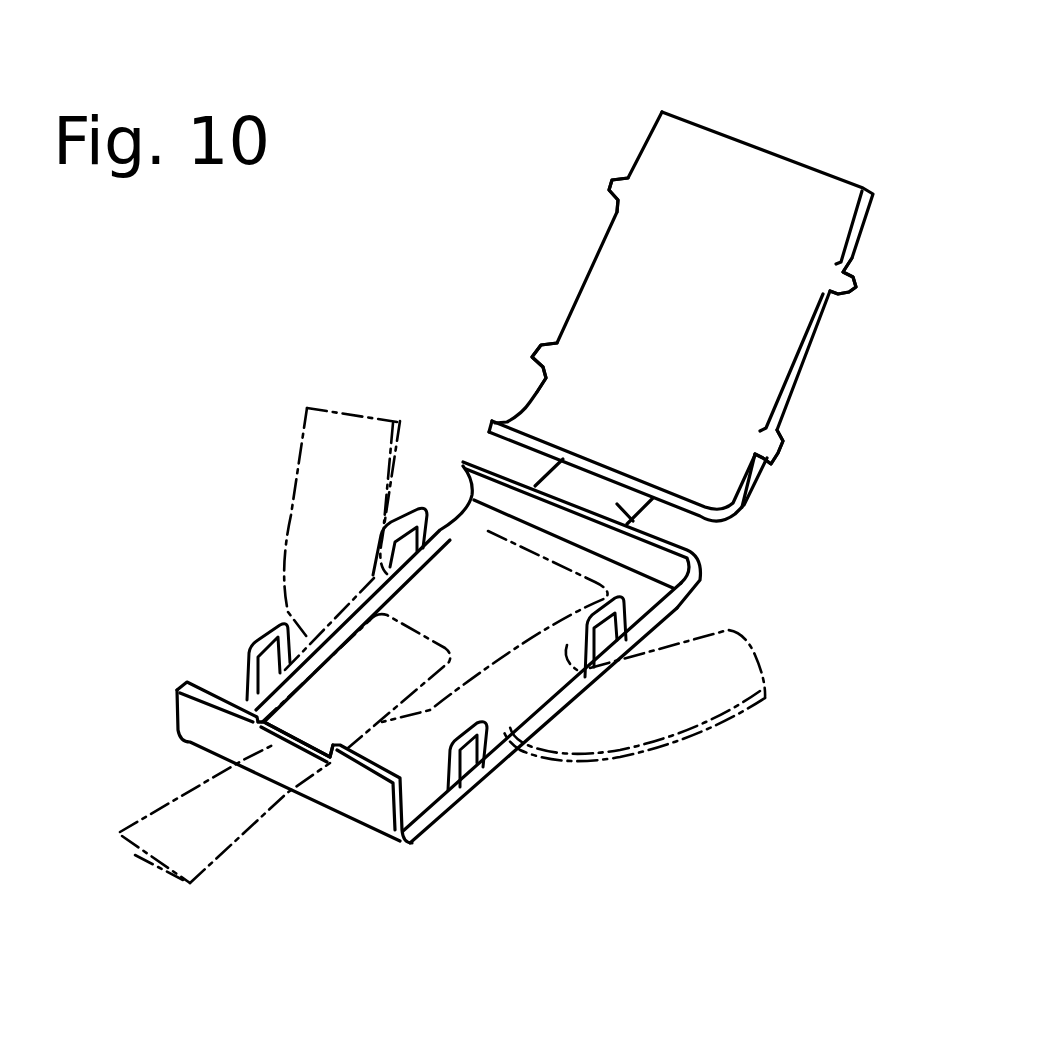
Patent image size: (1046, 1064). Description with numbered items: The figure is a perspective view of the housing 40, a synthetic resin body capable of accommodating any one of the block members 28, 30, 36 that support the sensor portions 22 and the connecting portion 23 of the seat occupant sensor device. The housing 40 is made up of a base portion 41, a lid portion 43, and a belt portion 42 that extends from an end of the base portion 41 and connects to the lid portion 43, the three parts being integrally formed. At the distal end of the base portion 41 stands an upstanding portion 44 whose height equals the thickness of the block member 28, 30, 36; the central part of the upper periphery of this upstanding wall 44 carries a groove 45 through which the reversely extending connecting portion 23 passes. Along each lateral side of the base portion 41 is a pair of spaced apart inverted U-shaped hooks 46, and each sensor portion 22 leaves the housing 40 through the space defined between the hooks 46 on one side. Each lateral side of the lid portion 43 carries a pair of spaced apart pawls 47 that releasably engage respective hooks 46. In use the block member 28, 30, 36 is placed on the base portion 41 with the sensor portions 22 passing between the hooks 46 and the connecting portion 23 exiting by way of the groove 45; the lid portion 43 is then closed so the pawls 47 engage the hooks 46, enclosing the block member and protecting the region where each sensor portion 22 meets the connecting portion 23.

The housing 40 is at (426, 286).
The lid portion 43 is at (750, 167).
The pawls 47 is at (612, 183).
The belt portion 42 is at (633, 521).
The base portion 41 is at (423, 797).
The upstanding portion 44 is at (347, 793).
The groove 45 is at (277, 743).
The inverted U-shaped hooks 46 is at (414, 510).
The sensor portions 22 is at (313, 472).
The connecting portion 23 is at (173, 803).
The block member 28 is at (490, 643).
The block member 30 is at (495, 626).
The block member 36 is at (316, 671).